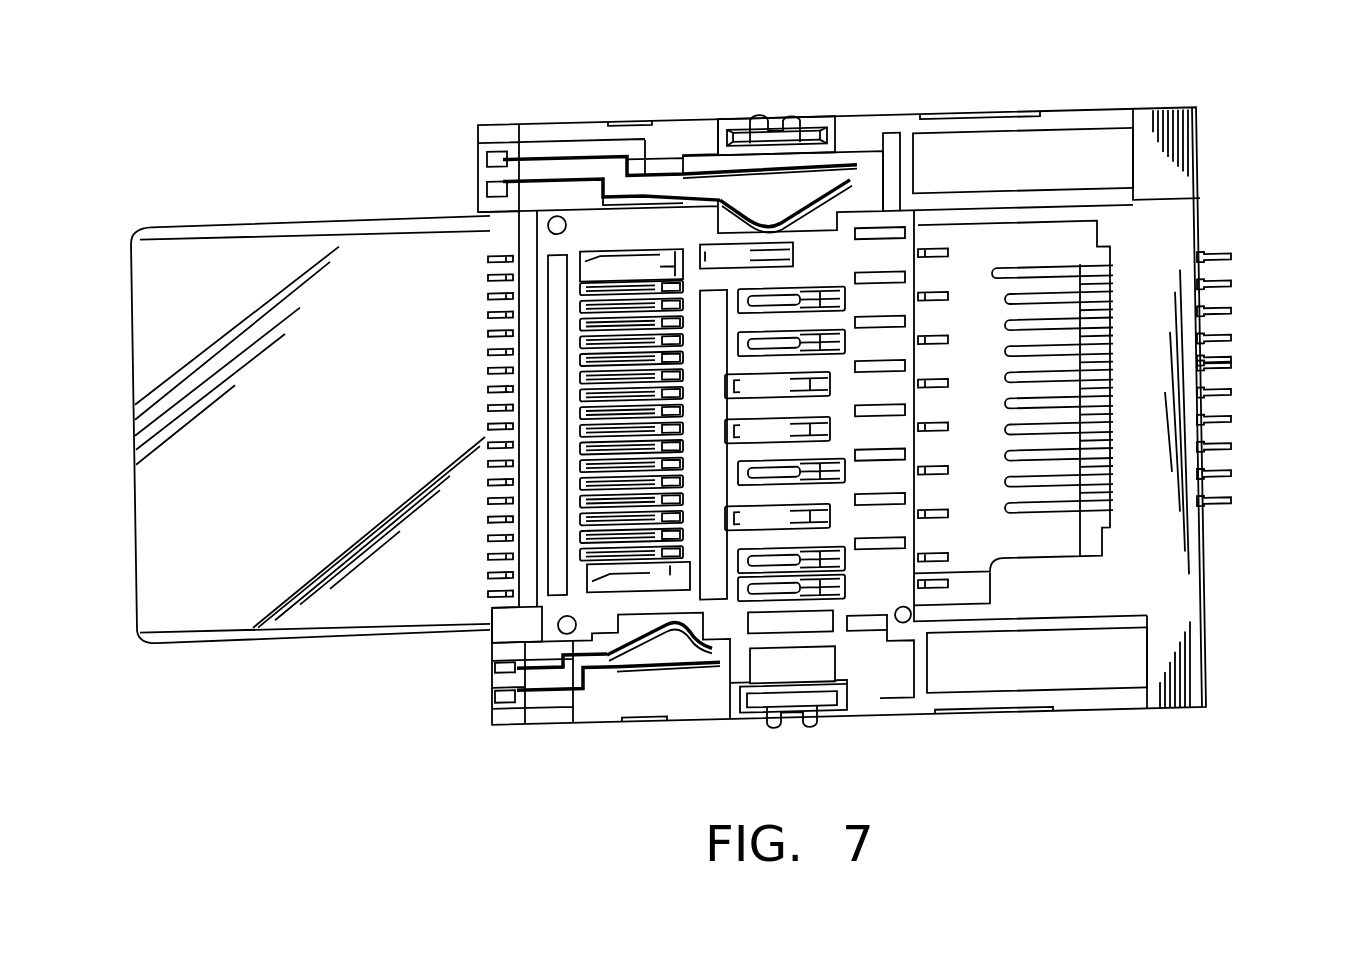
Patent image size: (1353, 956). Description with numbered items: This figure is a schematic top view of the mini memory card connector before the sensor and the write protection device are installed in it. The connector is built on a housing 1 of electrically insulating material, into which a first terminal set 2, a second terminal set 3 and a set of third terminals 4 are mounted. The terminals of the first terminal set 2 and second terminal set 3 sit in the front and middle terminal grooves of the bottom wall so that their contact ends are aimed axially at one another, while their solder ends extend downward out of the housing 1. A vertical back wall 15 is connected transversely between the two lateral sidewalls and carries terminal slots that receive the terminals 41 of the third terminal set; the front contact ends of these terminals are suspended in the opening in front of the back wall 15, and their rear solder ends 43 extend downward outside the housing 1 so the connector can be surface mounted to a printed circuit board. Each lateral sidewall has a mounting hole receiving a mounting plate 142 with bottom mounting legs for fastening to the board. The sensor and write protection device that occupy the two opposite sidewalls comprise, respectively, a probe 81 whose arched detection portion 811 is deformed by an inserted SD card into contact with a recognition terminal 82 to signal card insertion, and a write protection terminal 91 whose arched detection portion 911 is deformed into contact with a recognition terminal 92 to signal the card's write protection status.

The housing 1 is at (1189, 663).
The first terminal set 2 is at (490, 292).
The second terminal set 3 is at (936, 251).
The set of third terminals 4 is at (1207, 263).
The vertical back wall 15 is at (1207, 556).
The terminal of the third terminal set 41 is at (1021, 268).
The rear solder end 43 is at (1230, 370).
The probe 81 is at (582, 153).
The recognition terminal 82 is at (546, 152).
The arched detection portion 811 is at (777, 215).
The write protection terminal 91 is at (540, 726).
The recognition terminal 92 is at (574, 726).
The arched detection portion 911 is at (672, 623).
The mounting plate 142 is at (812, 728).